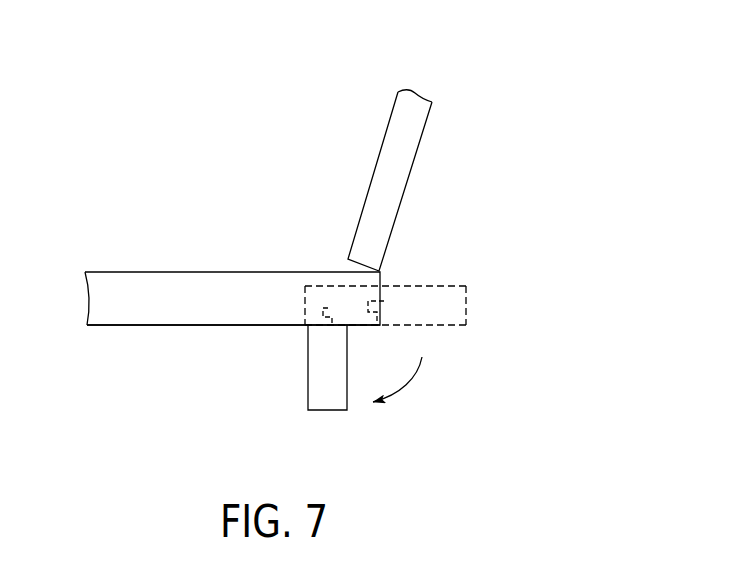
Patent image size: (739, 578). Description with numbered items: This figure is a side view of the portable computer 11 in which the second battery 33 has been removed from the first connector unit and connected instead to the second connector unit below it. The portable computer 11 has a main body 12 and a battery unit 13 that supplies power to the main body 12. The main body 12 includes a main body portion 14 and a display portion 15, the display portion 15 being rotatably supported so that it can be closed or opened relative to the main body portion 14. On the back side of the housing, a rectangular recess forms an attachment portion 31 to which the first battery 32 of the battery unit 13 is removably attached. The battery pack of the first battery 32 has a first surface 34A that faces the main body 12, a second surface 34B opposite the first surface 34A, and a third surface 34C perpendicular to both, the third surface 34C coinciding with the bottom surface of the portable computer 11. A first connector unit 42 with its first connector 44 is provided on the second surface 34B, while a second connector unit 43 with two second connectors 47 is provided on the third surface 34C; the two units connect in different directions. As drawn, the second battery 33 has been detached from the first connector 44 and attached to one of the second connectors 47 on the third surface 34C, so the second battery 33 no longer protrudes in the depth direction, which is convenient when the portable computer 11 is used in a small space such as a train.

The portable computer 11 is at (263, 140).
The main body 12 is at (214, 267).
The battery unit 13 is at (403, 267).
The main body portion 14 is at (146, 326).
The display portion 15 is at (413, 137).
The attachment portion 31 is at (301, 311).
The first battery 32 is at (306, 286).
The second battery 33 is at (466, 301).
The first surface 34A is at (299, 315).
The second surface 34B is at (386, 288).
The third surface 34C is at (305, 327).
The first connector unit 42 is at (395, 310).
The second connector unit 43 is at (345, 306).
The first connector 44 is at (373, 327).
The second connector 47 is at (328, 308).